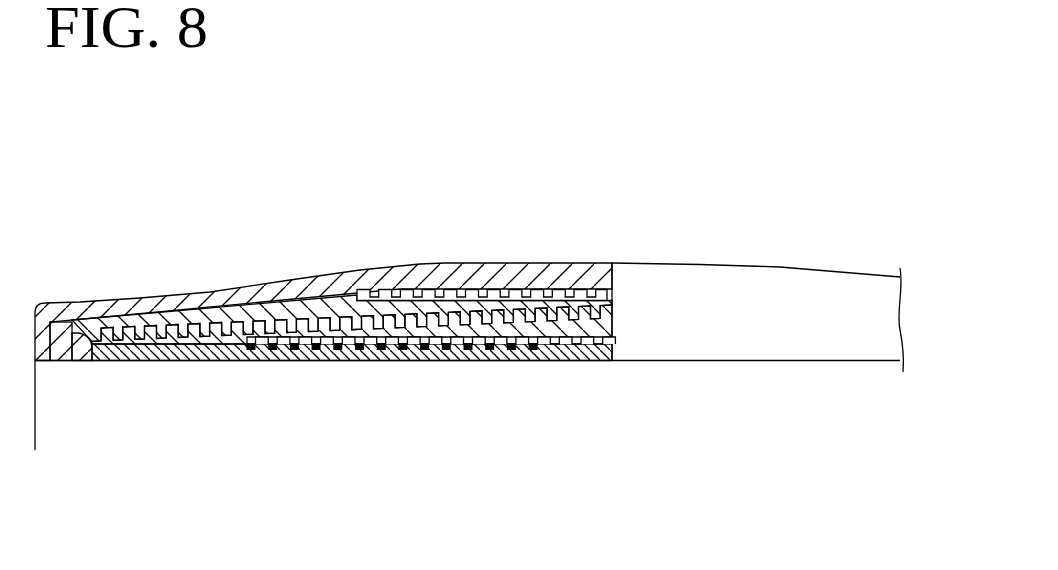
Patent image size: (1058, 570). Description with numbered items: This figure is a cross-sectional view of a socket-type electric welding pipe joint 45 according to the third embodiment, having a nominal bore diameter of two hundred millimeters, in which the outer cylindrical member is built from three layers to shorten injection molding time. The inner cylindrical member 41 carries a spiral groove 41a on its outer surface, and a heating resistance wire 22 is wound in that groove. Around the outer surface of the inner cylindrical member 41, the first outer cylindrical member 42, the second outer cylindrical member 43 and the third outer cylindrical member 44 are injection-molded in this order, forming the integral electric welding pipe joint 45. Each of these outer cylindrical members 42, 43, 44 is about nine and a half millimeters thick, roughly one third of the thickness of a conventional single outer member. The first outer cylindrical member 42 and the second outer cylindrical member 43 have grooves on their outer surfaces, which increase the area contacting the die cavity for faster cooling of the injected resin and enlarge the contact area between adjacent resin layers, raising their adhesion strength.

The heating resistance wire 22 is at (255, 360).
The inner cylindrical member 41 is at (557, 278).
The spiral groove 41a is at (525, 343).
The first outer cylindrical member 42 is at (508, 290).
The second outer cylindrical member 43 is at (446, 285).
The third outer cylindrical member 44 is at (399, 280).
The electric welding pipe joint 45 is at (615, 247).